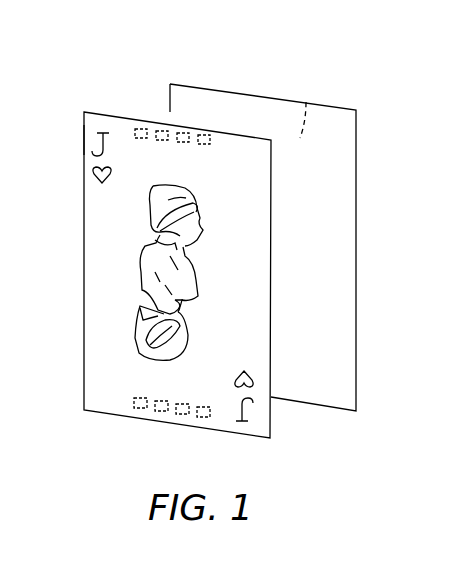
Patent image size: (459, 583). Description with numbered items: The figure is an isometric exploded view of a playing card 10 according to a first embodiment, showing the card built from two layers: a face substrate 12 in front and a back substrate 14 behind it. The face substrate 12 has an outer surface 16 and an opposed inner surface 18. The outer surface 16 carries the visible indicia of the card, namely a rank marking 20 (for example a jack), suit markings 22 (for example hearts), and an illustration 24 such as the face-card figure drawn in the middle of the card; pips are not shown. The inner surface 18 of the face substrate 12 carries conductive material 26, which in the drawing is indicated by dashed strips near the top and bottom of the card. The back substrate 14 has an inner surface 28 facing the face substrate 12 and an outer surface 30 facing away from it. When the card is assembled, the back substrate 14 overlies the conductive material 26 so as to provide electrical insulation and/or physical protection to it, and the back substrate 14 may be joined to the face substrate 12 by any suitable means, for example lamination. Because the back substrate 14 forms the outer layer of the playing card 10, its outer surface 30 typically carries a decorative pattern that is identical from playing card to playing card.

The playing card 10 is at (302, 432).
The face substrate 12 is at (83, 388).
The back substrate 14 is at (356, 290).
The outer surface 16 is at (238, 312).
The inner surface 18 is at (117, 155).
The rank marking 20 is at (86, 140).
The suit markings 22 is at (86, 183).
The illustrations 24 is at (117, 257).
The conductive material 26 is at (153, 108).
The inner surface 28 is at (320, 246).
The outer surface 30 is at (306, 102).